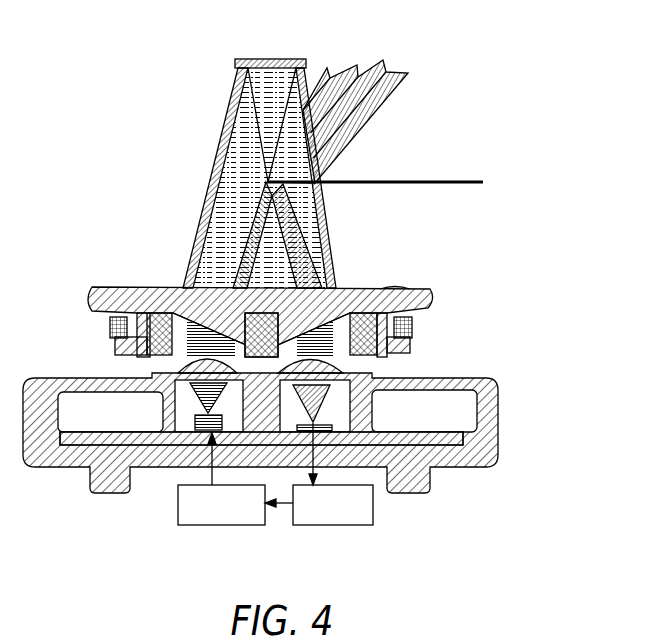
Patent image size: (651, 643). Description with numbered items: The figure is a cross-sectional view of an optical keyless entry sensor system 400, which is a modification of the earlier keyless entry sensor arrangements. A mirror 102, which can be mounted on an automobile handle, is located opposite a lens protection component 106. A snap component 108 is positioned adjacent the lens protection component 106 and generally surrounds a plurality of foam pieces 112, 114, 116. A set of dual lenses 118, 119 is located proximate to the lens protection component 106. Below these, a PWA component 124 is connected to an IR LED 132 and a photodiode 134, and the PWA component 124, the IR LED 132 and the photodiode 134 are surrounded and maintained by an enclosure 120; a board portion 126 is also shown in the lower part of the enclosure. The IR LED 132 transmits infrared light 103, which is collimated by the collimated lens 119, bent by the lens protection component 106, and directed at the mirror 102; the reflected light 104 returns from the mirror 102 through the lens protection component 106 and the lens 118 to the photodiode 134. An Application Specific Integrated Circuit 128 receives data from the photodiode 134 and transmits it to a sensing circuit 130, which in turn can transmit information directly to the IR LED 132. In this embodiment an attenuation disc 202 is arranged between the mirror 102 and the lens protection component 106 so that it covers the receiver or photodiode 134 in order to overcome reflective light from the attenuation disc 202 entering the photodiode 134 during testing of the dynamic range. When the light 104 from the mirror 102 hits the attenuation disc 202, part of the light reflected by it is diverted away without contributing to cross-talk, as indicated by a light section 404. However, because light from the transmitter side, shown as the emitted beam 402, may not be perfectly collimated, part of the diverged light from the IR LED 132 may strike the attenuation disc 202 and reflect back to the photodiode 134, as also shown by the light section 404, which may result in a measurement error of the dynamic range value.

The mirror 102 is at (306, 62).
The infrared light 103 is at (213, 172).
The reflected light 104 is at (318, 182).
The lens protection component 106 is at (415, 292).
The snap component 108 is at (106, 327).
The foam piece 112 is at (135, 286).
The foam piece 114 is at (343, 290).
The foam piece 116 is at (402, 291).
The lens 118 is at (347, 366).
The collimated lens 119 is at (163, 398).
The enclosure 120 is at (499, 395).
The PWA component 124 is at (450, 440).
The circuit board 126 is at (497, 450).
The Application Specific Integrated Circuit (ASIC) 128 is at (332, 528).
The sensing circuit 130 is at (222, 528).
The IR LED 132 is at (187, 433).
The photodiode 134 is at (337, 433).
The attenuation disc 202 is at (460, 180).
The optical keyless entry sensor system 400 is at (568, 108).
The light cone wall 402 is at (228, 112).
The light section 404 is at (390, 97).